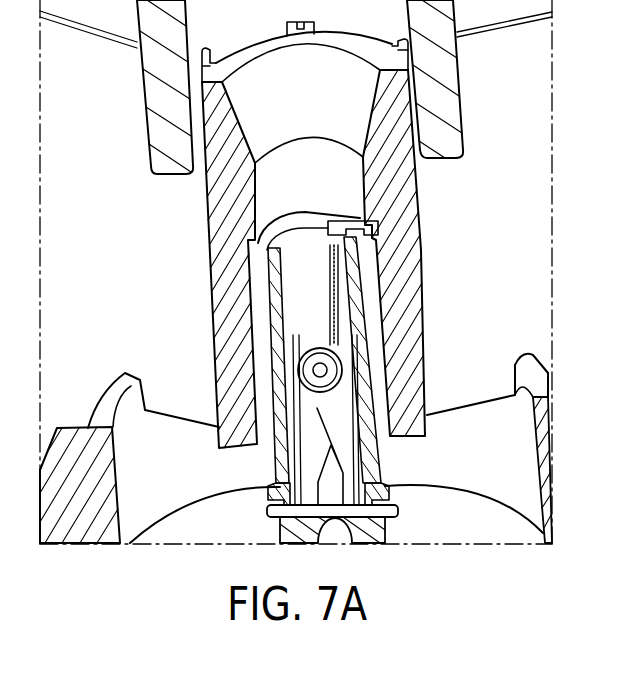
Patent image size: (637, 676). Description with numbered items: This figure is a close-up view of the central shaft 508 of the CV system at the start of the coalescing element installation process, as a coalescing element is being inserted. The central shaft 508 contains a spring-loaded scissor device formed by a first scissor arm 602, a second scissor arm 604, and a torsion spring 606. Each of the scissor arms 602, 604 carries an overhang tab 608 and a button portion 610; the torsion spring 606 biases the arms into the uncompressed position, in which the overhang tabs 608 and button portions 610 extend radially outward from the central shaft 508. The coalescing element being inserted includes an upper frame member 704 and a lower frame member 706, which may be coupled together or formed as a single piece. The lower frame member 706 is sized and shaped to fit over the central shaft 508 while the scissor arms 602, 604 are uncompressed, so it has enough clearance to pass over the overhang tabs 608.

The upper frame member 704 is at (153, 95).
The lower frame member 706 is at (223, 256).
The overhang tab 608 is at (368, 223).
The second scissor arm 604 is at (340, 311).
The torsion spring 606 is at (336, 372).
The first scissor arm 602 is at (343, 440).
The button portion 610 is at (268, 494).
The central shaft 508 is at (377, 545).